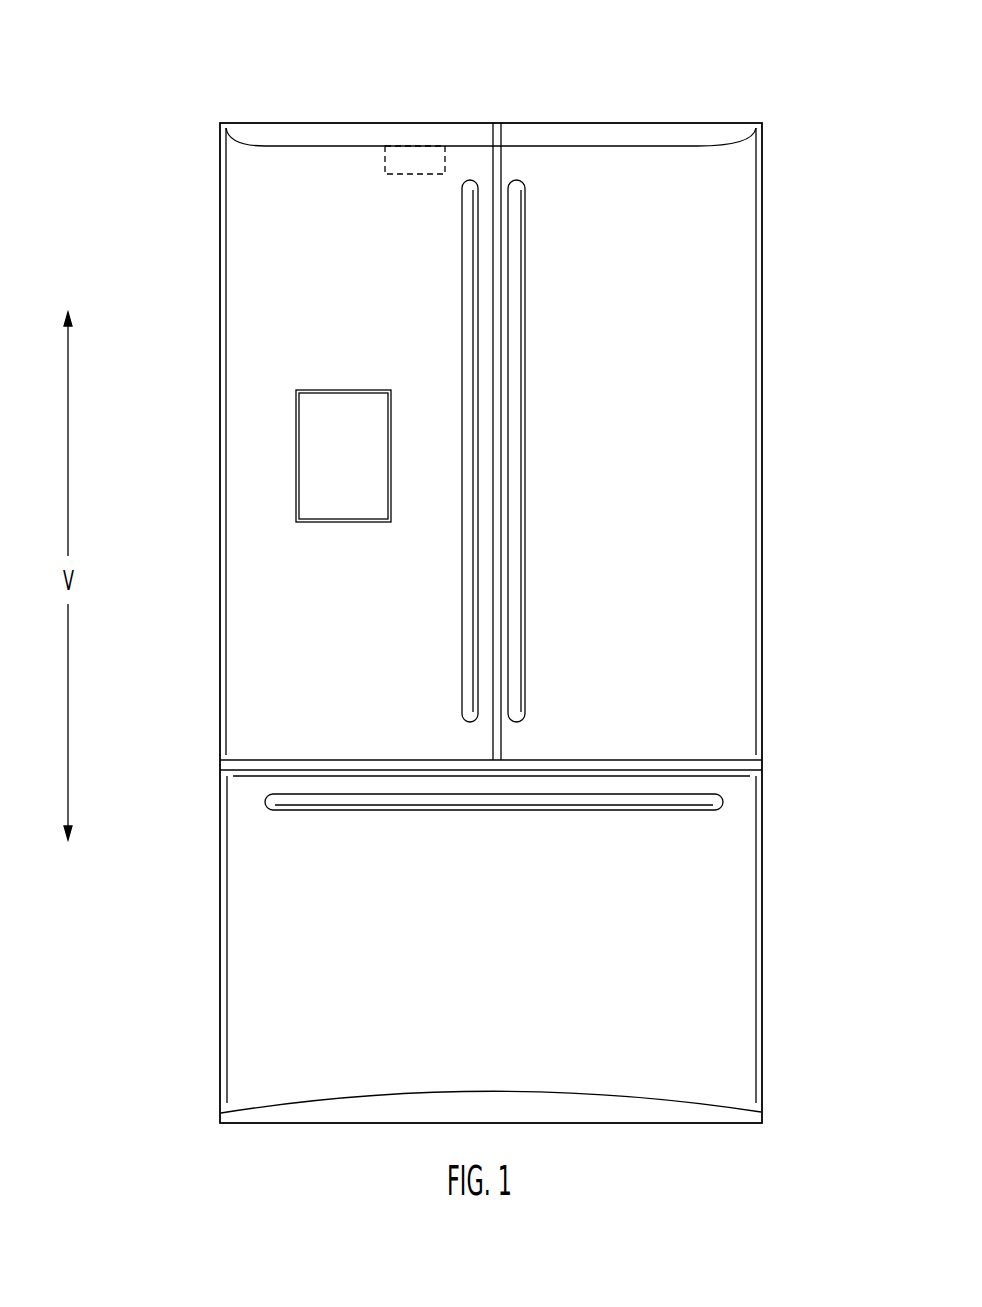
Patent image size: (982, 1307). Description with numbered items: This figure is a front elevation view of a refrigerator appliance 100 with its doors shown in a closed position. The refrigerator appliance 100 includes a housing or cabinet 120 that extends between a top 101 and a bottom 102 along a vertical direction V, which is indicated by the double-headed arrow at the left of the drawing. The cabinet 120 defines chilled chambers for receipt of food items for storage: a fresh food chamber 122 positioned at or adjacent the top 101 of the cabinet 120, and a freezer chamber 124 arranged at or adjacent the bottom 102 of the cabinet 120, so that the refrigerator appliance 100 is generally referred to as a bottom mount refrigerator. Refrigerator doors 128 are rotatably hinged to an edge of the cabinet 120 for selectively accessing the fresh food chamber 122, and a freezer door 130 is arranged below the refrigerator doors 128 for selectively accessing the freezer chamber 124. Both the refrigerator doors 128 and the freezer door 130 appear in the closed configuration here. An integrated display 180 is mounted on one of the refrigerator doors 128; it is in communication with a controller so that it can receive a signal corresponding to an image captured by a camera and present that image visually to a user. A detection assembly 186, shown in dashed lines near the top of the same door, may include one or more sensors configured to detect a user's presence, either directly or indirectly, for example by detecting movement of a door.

The refrigerator appliance 100 is at (773, 67).
The top 101 is at (205, 109).
The bottom 102 is at (209, 1112).
The cabinet 120 is at (762, 763).
The fresh food chamber 122 is at (722, 549).
The freezer chamber 124 is at (697, 989).
The refrigerator doors 128 is at (333, 175).
The freezer door 130 is at (252, 972).
The integrated display 180 is at (296, 445).
The detection assembly 186 is at (410, 146).